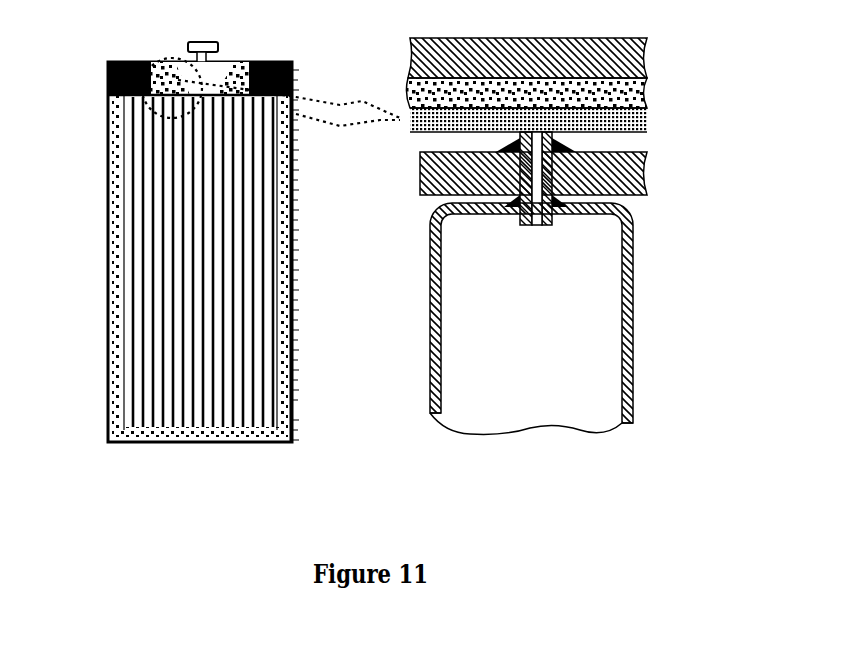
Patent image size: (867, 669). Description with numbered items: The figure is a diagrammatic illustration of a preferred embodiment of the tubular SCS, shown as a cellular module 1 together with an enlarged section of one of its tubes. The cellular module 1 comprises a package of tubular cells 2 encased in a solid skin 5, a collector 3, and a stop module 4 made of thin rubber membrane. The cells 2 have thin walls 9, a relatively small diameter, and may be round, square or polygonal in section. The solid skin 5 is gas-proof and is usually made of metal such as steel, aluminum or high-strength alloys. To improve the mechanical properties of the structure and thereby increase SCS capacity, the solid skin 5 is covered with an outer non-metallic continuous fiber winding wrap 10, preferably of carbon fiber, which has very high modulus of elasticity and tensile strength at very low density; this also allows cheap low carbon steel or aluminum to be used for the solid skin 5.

The cellular module 1 is at (295, 411).
The cells 2 is at (242, 240).
The collector 3 is at (212, 43).
The stop module 4 is at (252, 74).
The solid skin 5 is at (120, 202).
The thin walls 9 is at (429, 276).
The outer non-metallic continuous fiber winding wrap 10 is at (110, 297).